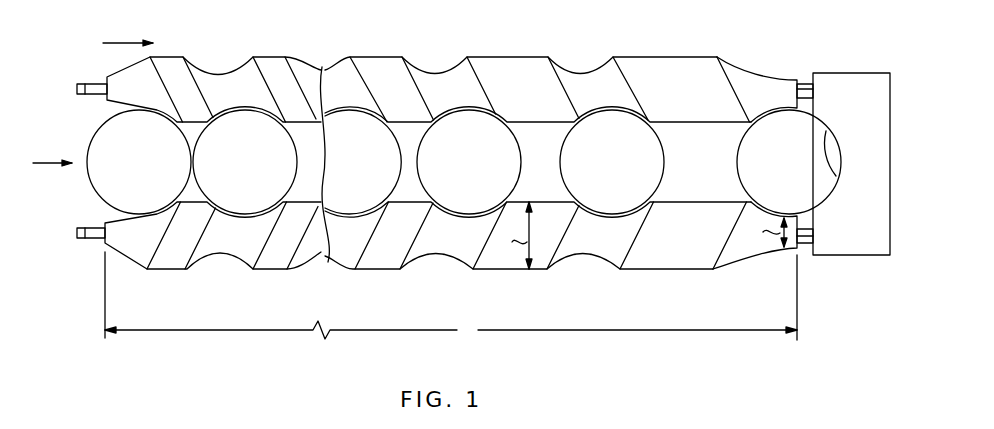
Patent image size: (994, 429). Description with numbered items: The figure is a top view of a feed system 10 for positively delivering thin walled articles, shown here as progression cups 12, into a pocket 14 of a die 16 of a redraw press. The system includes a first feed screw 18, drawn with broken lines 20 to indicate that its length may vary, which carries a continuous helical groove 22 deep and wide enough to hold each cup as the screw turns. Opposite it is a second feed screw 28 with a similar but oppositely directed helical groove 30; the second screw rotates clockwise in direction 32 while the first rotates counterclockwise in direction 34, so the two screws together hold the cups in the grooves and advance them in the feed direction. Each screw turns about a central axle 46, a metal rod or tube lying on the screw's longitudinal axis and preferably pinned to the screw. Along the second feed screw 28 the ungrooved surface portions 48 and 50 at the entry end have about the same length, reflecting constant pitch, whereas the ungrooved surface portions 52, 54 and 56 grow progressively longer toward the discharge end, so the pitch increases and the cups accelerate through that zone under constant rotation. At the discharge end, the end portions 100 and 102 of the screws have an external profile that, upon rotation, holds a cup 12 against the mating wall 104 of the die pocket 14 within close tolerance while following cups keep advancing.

The feed system 10 is at (498, 40).
The progression cups 12 is at (128, 171).
The pocket 14 is at (836, 176).
The die 16 is at (860, 258).
The feed screw 18 is at (657, 265).
The broken lines 20 is at (324, 262).
The helical groove 22 is at (210, 252).
The second opposed feed screw 28 is at (705, 57).
The helical groove 30 is at (227, 75).
The direction of rotation 32 is at (88, 79).
The direction of rotation 34 is at (97, 247).
The central axle 46 is at (76, 94).
The ungrooved surface portion 48 is at (170, 57).
The ungrooved surface portion 50 is at (280, 55).
The ungrooved surface portion 52 is at (375, 53).
The ungrooved surface portion 54 is at (527, 55).
The ungrooved surface portion 56 is at (653, 57).
The end portion 100 is at (757, 83).
The end portion 102 is at (737, 252).
The mating wall 104 is at (826, 131).